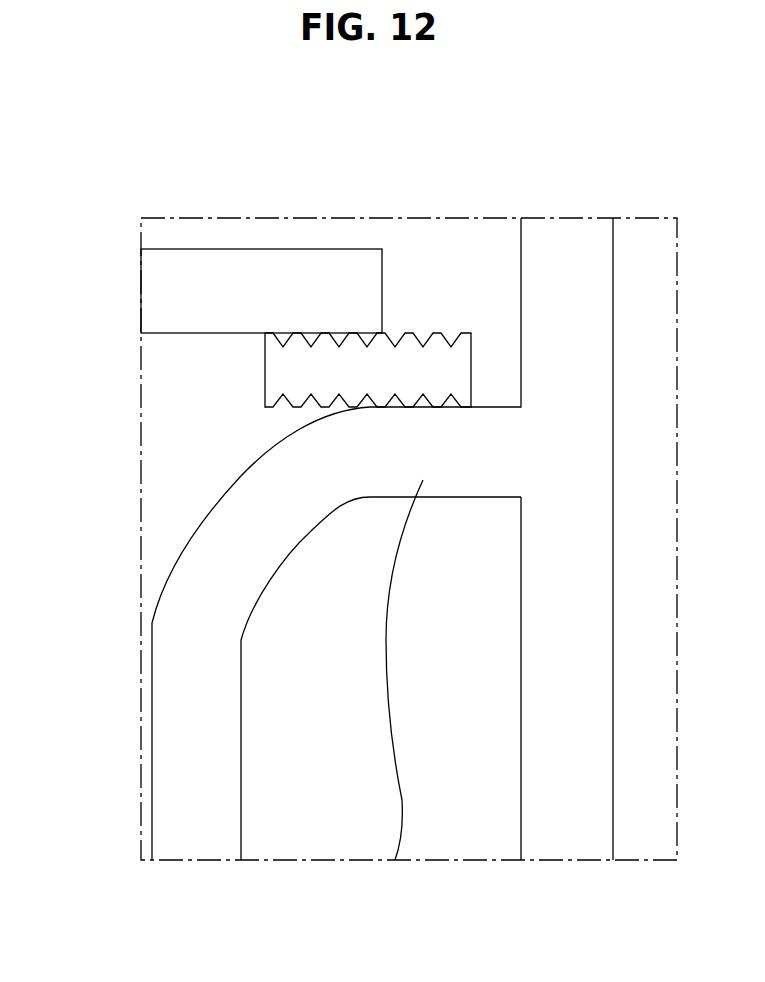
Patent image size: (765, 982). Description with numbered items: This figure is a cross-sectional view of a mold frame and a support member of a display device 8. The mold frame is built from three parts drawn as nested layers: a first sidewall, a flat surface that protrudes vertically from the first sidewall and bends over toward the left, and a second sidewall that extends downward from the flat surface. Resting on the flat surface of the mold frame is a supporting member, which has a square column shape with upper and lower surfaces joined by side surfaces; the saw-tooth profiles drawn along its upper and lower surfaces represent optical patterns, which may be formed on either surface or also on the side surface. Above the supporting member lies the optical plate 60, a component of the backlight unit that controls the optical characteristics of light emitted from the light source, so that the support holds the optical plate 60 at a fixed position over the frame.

The display device 8 is at (146, 136).
The optical plate 60 is at (152, 302).